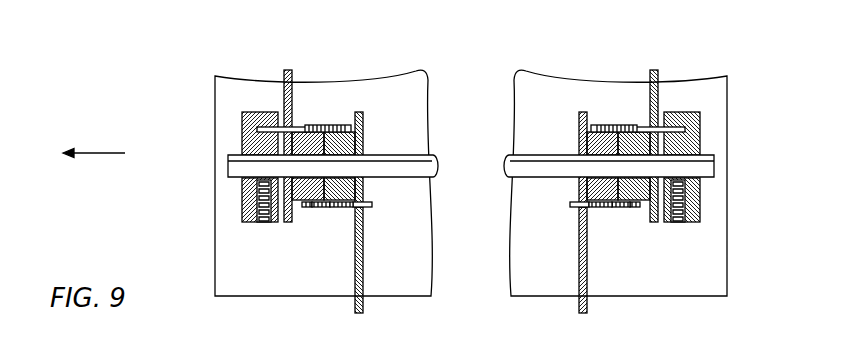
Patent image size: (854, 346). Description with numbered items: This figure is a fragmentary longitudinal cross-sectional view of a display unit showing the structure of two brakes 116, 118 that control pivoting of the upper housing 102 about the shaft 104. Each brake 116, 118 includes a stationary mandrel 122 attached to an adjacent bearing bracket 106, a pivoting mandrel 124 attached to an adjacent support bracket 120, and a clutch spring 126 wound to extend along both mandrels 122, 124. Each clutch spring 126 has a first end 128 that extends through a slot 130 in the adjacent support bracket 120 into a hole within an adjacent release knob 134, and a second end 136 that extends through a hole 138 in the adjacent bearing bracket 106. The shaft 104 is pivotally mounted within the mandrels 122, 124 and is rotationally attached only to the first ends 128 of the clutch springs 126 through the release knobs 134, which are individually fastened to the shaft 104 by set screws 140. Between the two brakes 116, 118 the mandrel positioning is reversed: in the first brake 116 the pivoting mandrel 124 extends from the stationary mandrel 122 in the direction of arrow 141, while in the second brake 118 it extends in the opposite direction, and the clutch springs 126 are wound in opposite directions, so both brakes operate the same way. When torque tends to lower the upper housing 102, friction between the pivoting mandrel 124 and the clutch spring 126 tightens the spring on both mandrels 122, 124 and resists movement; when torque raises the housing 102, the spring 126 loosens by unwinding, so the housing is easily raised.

The upper housing 102 is at (215, 123).
The shaft 104 is at (381, 151).
The bearing bracket 106 is at (365, 248).
The brake 116 is at (336, 111).
The brake 118 is at (605, 111).
The support bracket 120 is at (292, 118).
The stationary mandrel 122 is at (352, 114).
The pivoting mandrel 124 is at (301, 210).
The clutch spring 126 is at (313, 208).
The first end 128 is at (283, 115).
The slot 130 is at (295, 122).
The release knob 134 is at (243, 198).
The second end 136 is at (353, 208).
The hole 138 is at (368, 207).
The set screw 140 is at (265, 222).
The arrow 141 is at (103, 153).